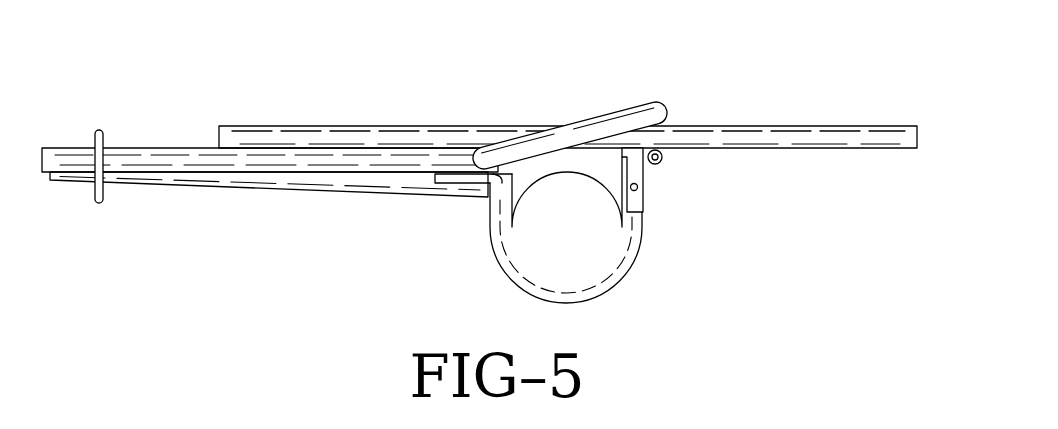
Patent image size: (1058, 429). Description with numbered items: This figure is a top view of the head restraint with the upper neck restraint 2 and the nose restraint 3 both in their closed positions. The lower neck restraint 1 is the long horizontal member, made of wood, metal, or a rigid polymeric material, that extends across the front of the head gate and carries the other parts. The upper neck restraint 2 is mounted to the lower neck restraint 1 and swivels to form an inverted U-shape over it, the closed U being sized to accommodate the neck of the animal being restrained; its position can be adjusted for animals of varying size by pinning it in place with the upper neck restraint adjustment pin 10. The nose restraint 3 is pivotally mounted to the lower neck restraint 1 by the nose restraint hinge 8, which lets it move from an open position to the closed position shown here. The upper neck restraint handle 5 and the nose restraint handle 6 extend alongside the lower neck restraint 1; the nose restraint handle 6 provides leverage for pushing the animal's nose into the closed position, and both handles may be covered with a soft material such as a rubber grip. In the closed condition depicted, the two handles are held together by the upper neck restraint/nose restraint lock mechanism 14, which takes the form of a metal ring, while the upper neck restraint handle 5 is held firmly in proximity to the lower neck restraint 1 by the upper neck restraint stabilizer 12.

The lower neck restraint 1 is at (780, 137).
The upper neck restraint 2 is at (597, 135).
The nose restraint 3 is at (580, 292).
The upper neck restraint handle 5 is at (173, 158).
The nose restraint handle 6 is at (299, 190).
The nose restraint hinge 8 is at (648, 162).
The upper neck restraint adjustment pin 10 is at (661, 160).
The upper neck restraint stabilizer 12 is at (453, 184).
The upper neck restraint/nose restraint lock mechanism 14 is at (93, 201).